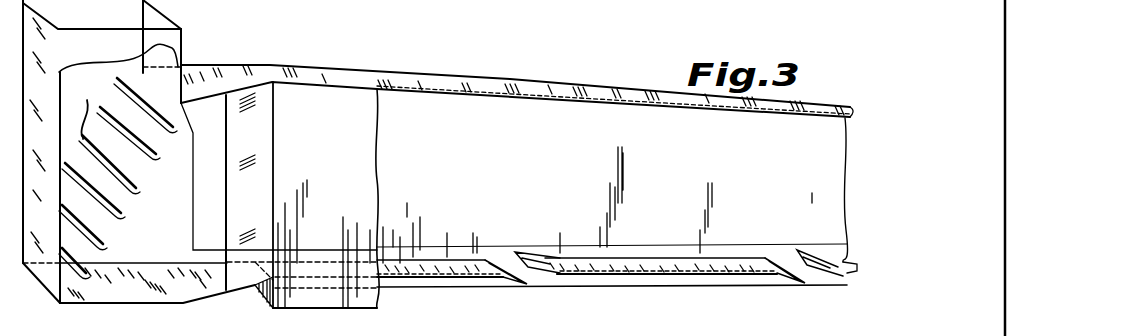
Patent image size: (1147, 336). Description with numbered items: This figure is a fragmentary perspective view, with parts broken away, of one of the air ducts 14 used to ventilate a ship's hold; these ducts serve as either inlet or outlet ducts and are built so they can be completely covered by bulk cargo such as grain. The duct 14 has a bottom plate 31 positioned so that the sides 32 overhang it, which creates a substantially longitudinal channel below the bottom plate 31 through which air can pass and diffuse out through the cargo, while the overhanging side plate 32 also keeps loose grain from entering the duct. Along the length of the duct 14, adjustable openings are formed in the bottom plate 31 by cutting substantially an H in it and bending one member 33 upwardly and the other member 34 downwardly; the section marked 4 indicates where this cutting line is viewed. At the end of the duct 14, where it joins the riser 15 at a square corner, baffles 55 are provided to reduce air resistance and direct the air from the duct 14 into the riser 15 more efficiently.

The section line 4- 4 is at (47, 78).
The air duct 14 is at (492, 81).
The riser 15 is at (167, 40).
The bottom plate 31 is at (425, 268).
The side plate 32 is at (363, 181).
The upwardly bent member 33 is at (537, 266).
The downwardly bent member 34 is at (497, 268).
The baffle 55 is at (117, 79).